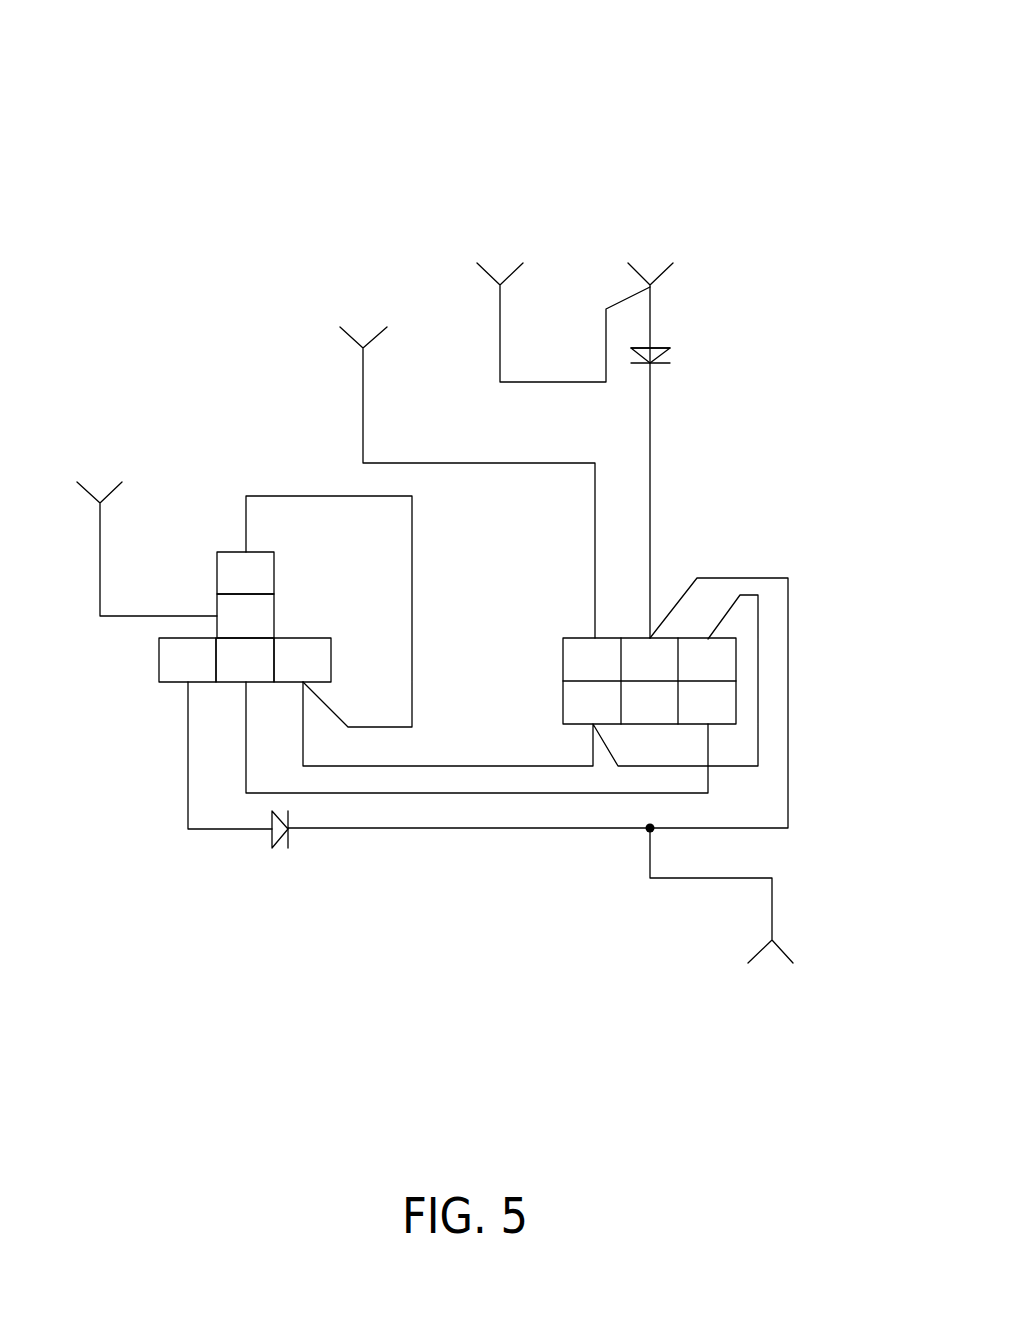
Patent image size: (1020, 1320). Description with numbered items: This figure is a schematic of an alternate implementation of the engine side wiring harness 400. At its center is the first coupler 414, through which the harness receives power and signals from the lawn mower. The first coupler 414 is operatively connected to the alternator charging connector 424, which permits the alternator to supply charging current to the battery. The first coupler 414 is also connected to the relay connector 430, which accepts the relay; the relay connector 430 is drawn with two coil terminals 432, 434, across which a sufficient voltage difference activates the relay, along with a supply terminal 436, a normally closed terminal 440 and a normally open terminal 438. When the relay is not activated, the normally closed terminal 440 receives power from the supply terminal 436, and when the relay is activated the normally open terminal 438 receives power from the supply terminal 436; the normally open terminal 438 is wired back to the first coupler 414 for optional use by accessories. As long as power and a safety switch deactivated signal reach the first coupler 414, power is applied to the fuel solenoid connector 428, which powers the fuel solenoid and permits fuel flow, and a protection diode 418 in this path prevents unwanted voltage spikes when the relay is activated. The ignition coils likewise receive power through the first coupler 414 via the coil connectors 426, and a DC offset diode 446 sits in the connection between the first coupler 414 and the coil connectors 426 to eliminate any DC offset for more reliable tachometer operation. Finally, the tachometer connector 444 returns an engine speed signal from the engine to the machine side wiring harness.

The engine side wiring harness 400 is at (182, 111).
The first coupler 414 is at (544, 647).
The protection diode 418 is at (278, 868).
The alternator charging connector 424 is at (467, 466).
The coil connectors 426 is at (575, 435).
The fuel solenoid connector 428 is at (147, 532).
The relay connector 430 is at (294, 594).
The coil terminal 432 is at (187, 660).
The coil terminal 434 is at (302, 660).
The supply terminal 436 is at (245, 573).
The normally open terminal 438 is at (245, 660).
The normally closed terminal 440 is at (245, 616).
The tachometer connector 444 is at (722, 910).
The DC offset diode 446 is at (683, 353).